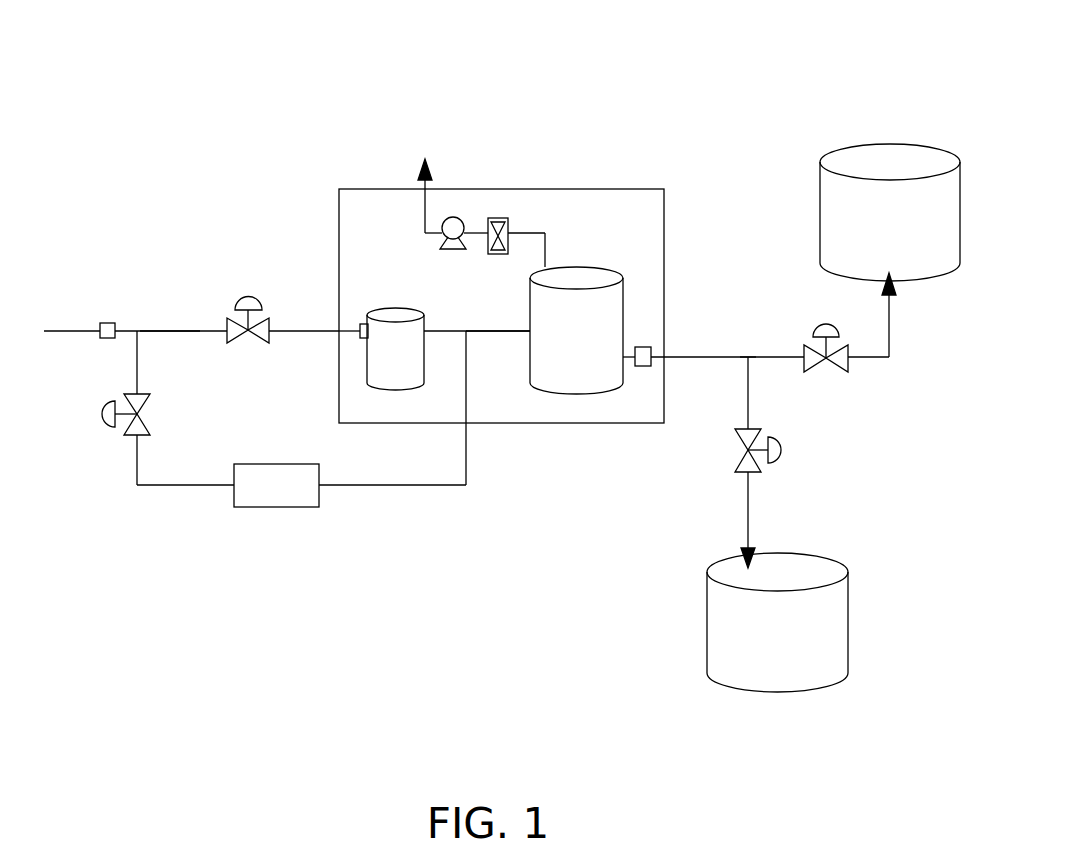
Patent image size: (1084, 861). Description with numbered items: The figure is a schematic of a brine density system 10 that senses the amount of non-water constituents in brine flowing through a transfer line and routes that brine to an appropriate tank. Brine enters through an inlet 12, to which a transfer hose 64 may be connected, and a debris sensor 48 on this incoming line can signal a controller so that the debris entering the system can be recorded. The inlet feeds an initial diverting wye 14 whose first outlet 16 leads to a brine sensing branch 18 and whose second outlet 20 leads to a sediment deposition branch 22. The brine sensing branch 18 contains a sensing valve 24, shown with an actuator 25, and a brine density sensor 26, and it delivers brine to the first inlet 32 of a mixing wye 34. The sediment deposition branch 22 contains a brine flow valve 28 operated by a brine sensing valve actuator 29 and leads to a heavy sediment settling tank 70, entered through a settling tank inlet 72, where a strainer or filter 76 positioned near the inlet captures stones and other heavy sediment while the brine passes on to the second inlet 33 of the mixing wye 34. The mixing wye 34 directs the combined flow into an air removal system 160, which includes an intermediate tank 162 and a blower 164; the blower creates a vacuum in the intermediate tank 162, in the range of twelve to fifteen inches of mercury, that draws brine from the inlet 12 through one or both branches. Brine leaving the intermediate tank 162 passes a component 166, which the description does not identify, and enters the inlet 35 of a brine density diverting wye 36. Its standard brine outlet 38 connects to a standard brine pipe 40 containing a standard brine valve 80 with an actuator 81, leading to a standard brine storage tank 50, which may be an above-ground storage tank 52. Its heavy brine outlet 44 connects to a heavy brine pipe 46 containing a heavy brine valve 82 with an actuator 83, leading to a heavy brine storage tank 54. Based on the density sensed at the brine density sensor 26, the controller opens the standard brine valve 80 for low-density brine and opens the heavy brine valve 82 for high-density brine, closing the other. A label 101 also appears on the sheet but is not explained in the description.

The brine density system 10 is at (338, 78).
The controller 101 is at (573, 107).
The inlet 12 is at (60, 334).
The initial diverting wye 14 is at (138, 327).
The first outlet 16 is at (140, 335).
The brine sensing branch 18 is at (157, 487).
The second outlet 20 is at (142, 330).
The sediment deposition branch 22 is at (298, 328).
The sensing valve 24 is at (145, 397).
The bypass valve actuator 25 is at (98, 418).
The brine density sensor 26 is at (270, 509).
The brine flow valve 28 is at (260, 343).
The brine sensing valve actuator 29 is at (243, 297).
The first inlet 32 is at (468, 338).
The second inlet 33 is at (463, 330).
The mixing wye 34 is at (468, 328).
The inlet 35 is at (743, 362).
The brine density diverting wye 36 is at (748, 355).
The standard brine outlet 38 is at (753, 362).
The standard brine pipe 40 is at (892, 357).
The heavy brine outlet 44 is at (750, 373).
The heavy brine pipe 46 is at (750, 507).
The debris sensor 48 is at (107, 340).
The standard brine storage tank 50 is at (876, 241).
The above-ground storage tank 52 is at (940, 241).
The heavy brine storage tank 54 is at (791, 648).
The transfer hose 64 is at (86, 327).
The heavy sediment settling tank 70 is at (413, 371).
The settling tank inlet 72 is at (359, 337).
The strainer or filter 76 is at (362, 323).
The standard brine valve 80 is at (848, 370).
The actuator 81 is at (817, 325).
The heavy brine valve 82 is at (737, 460).
The actuator 83 is at (787, 457).
The air removal system 160 is at (453, 213).
The intermediate tank 162 is at (549, 356).
The blower 164 is at (510, 220).
The outlet sensor 166 is at (643, 370).